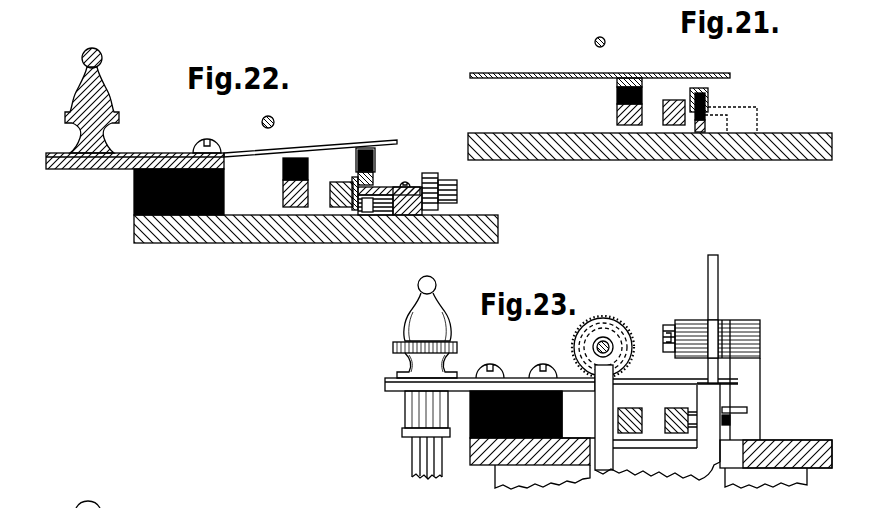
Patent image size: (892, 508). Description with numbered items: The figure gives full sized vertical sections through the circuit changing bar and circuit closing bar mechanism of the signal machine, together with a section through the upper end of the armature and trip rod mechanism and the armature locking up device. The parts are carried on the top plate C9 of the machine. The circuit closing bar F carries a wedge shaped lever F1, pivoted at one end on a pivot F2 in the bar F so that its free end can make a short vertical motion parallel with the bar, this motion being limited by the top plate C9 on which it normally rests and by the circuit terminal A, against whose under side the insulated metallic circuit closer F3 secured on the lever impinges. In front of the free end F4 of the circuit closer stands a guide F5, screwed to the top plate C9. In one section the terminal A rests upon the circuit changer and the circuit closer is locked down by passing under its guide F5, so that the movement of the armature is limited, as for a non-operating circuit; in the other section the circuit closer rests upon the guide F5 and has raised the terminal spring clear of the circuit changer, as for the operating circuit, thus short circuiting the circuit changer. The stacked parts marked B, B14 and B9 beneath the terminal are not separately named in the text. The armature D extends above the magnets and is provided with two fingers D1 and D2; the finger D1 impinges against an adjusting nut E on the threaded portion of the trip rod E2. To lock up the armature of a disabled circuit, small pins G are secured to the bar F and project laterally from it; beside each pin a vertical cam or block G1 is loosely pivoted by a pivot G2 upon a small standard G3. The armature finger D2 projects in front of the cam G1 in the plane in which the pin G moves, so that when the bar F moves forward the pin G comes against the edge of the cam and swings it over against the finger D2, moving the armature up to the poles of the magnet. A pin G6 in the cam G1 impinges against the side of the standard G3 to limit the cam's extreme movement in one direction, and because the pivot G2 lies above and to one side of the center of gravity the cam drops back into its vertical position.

In FIG. 22, the circuit terminal A is at (251, 158).
In FIG. 21, the circuit terminal A is at (528, 79).
In FIG. 23, the circuit terminal A is at (641, 383).
In FIG. 21, the key lever block B is at (617, 82).
In FIG. 22, the block B9 is at (283, 198).
In FIG. 21, the block B9 is at (617, 116).
In FIG. 23, the block B9 is at (628, 408).
In FIG. 22, the block B14 is at (283, 168).
In FIG. 21, the block B14 is at (617, 99).
In FIG. 22, the top plate C9 is at (235, 233).
In FIG. 21, the top plate C9 is at (607, 147).
In FIG. 23, the top plate C9 is at (485, 460).
In FIG. 23, the armature D is at (657, 460).
In FIG. 23, the armature finger D1 is at (604, 417).
In FIG. 23, the armature finger D2 is at (717, 422).
In FIG. 23, the adjusting nut E is at (576, 340).
In FIG. 22, the trip rod E2 is at (275, 121).
In FIG. 21, the trip rod E2 is at (606, 42).
In FIG. 22, the bar F is at (340, 182).
In FIG. 21, the bar F is at (668, 101).
In FIG. 23, the bar F is at (672, 408).
In FIG. 21, the wedge shaped lever F1 is at (699, 129).
In FIG. 22, the pivot F2 is at (458, 197).
In FIG. 22, the circuit closer F3 is at (376, 161).
In FIG. 21, the circuit closer F3 is at (709, 98).
In FIG. 22, the free end F4 is at (372, 180).
In FIG. 22, the guide F5 is at (387, 190).
In FIG. 23, the pin G is at (731, 419).
In FIG. 23, the cam or block G1 is at (719, 290).
In FIG. 23, the pivot G2 is at (667, 326).
In FIG. 23, the standard G3 is at (745, 399).
In FIG. 23, the pin G6 is at (748, 409).